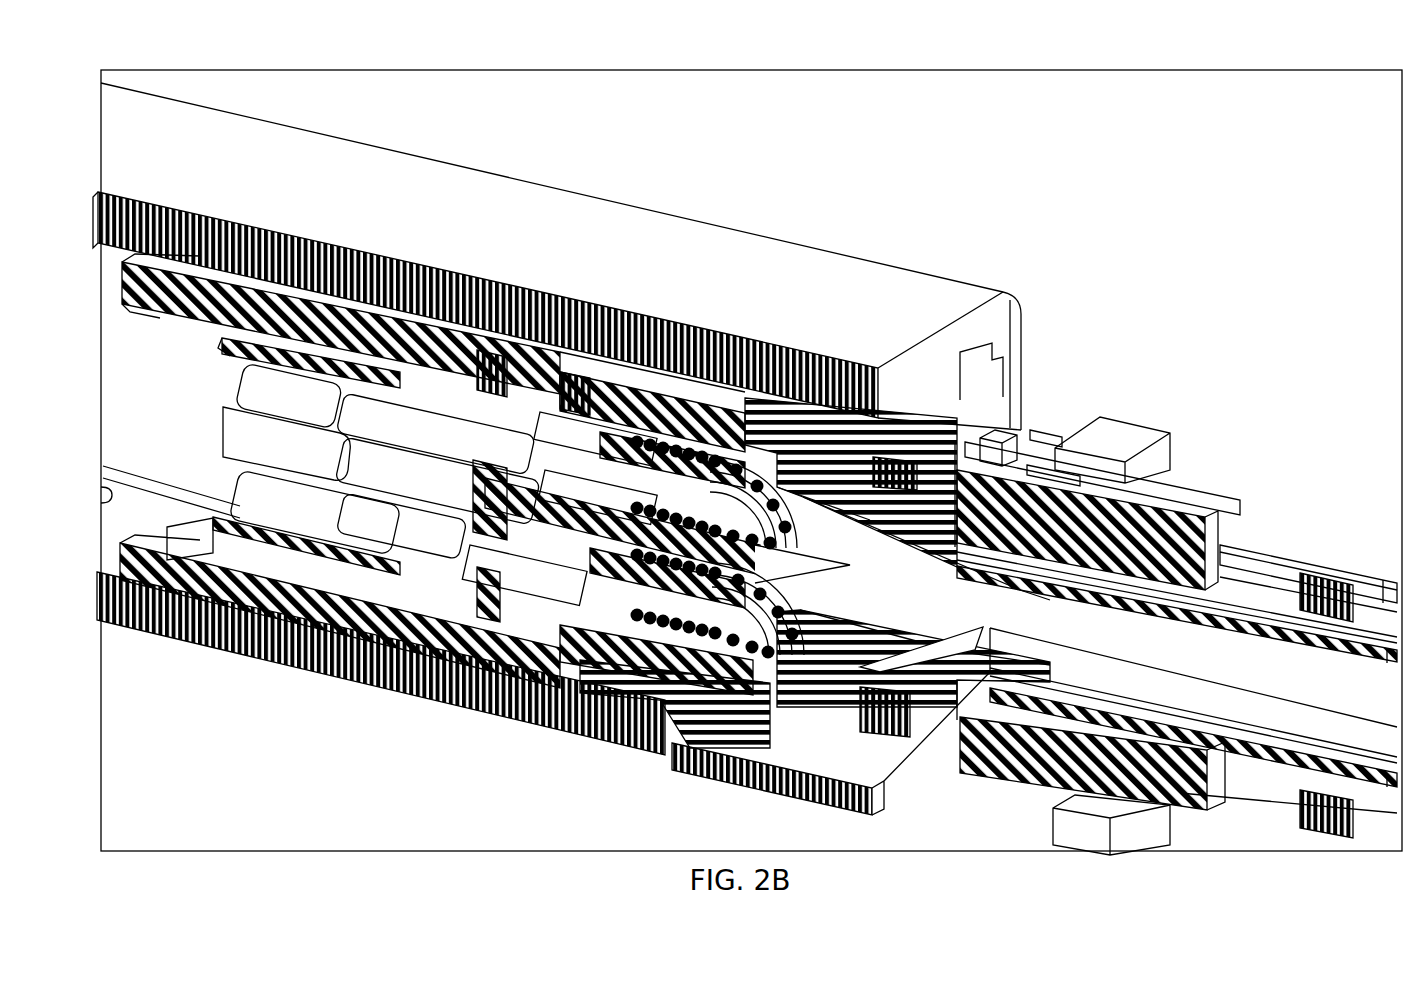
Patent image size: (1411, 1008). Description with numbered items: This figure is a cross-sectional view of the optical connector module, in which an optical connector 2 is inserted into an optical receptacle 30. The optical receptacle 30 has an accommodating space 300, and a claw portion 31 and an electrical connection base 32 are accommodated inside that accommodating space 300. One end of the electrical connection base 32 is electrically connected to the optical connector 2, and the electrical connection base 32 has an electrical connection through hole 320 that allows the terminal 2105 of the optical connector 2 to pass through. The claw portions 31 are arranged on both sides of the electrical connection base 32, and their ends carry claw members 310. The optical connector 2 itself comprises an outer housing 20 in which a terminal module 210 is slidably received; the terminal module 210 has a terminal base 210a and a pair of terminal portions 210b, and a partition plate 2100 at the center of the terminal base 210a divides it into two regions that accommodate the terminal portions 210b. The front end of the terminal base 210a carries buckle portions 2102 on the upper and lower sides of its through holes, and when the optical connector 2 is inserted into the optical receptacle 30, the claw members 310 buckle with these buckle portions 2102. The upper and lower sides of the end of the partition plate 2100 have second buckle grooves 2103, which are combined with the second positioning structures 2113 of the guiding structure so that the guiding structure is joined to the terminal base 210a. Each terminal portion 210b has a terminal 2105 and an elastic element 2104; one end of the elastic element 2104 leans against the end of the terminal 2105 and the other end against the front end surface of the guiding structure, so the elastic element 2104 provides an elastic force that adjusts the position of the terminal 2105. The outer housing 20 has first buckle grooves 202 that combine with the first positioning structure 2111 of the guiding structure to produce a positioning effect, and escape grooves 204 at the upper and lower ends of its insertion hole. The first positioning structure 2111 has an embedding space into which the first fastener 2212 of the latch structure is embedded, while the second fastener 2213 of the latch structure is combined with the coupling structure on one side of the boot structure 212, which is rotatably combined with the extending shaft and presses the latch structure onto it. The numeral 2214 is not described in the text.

The optical connector 2 is at (1153, 433).
The outer housing 20 is at (957, 440).
The optical receptacle 30 is at (885, 307).
The claw portion 31 is at (418, 343).
The electrical connection base 32 is at (262, 440).
The first buckle groove 202 is at (998, 548).
The escape groove 204 is at (1117, 493).
The terminal module 210 is at (883, 158).
The terminal base 210a is at (692, 413).
The terminal portion 210b is at (603, 433).
The boot structure 212 is at (725, 713).
The accommodating space 300 is at (216, 468).
The claw member 310 is at (178, 273).
The electrical connection through hole 320 is at (325, 513).
The partition plate 2100 is at (817, 562).
The buckle portion 2102 is at (572, 390).
The second buckle groove 2103 is at (782, 440).
The elastic element 2104 is at (712, 685).
The terminal 2105 is at (433, 538).
The first positioning structure 2111 is at (1055, 438).
The second positioning structure 2113 is at (900, 385).
The first fastener 2212 is at (1007, 470).
The second fastener 2213 is at (1335, 570).
The guide rail 2214 is at (1025, 465).